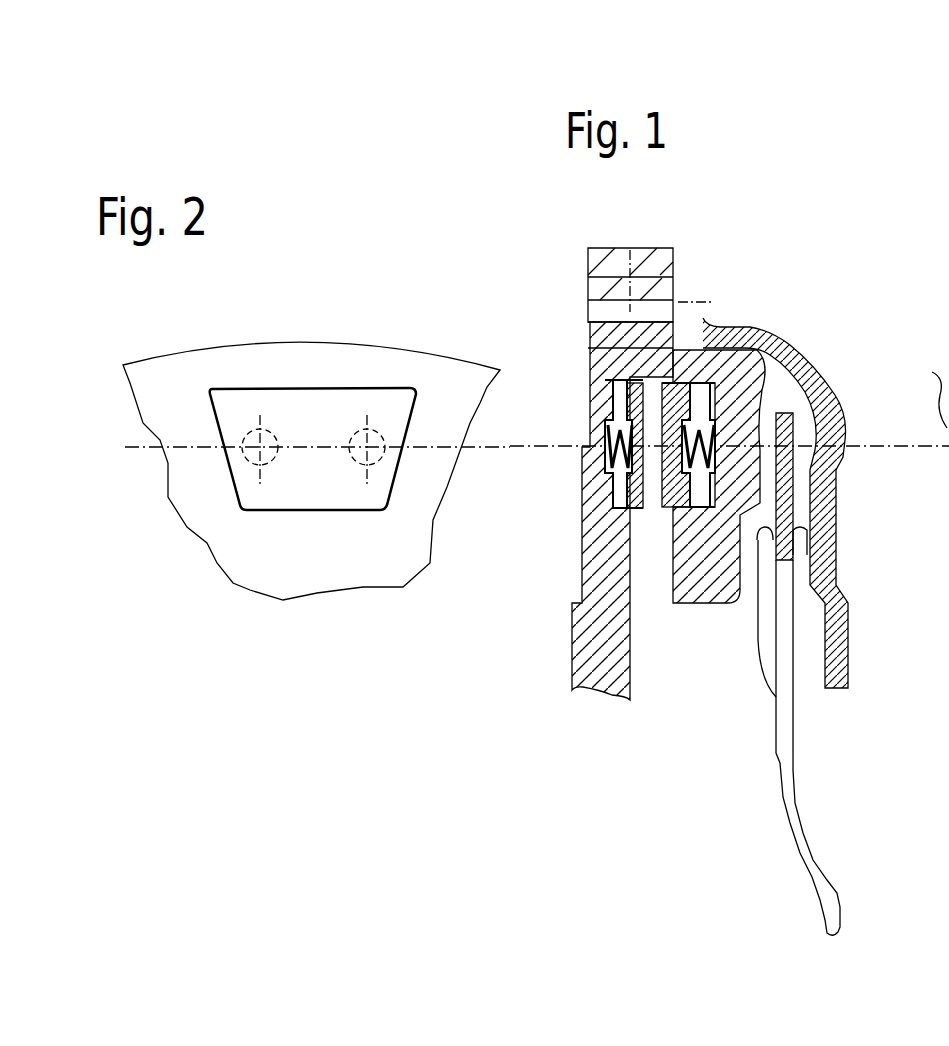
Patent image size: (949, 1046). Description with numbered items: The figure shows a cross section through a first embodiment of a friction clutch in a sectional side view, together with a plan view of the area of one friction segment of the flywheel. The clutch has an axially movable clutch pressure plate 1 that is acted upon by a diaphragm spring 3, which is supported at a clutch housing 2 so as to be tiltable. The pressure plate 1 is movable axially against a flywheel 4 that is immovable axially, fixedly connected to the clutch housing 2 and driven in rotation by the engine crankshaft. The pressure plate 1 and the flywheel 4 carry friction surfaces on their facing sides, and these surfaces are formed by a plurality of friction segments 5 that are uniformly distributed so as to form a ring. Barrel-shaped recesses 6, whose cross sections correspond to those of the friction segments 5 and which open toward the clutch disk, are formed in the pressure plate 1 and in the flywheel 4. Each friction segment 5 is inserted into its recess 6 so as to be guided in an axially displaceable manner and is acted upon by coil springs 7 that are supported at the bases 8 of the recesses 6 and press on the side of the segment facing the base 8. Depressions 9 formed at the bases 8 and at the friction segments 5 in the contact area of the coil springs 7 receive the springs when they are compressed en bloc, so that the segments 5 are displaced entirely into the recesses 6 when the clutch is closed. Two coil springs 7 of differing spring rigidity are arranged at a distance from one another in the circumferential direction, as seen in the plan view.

In FIG. 1, the clutch pressure plate 1 is at (703, 587).
In FIG. 1, the clutch housing 2 is at (827, 383).
In FIG. 1, the diaphragm spring 3 is at (782, 750).
In FIG. 1, the flywheel 4 is at (588, 630).
In FIG. 2, the flywheel 4 is at (378, 368).
In FIG. 1, the friction segment 5 is at (700, 360).
In FIG. 2, the friction segment 5 is at (278, 408).
In FIG. 1, the barrel-shaped recess 6 is at (696, 380).
In FIG. 1, the coil spring 7 is at (712, 475).
In FIG. 1, the base 8 is at (712, 490).
In FIG. 1, the depression 9 is at (717, 457).